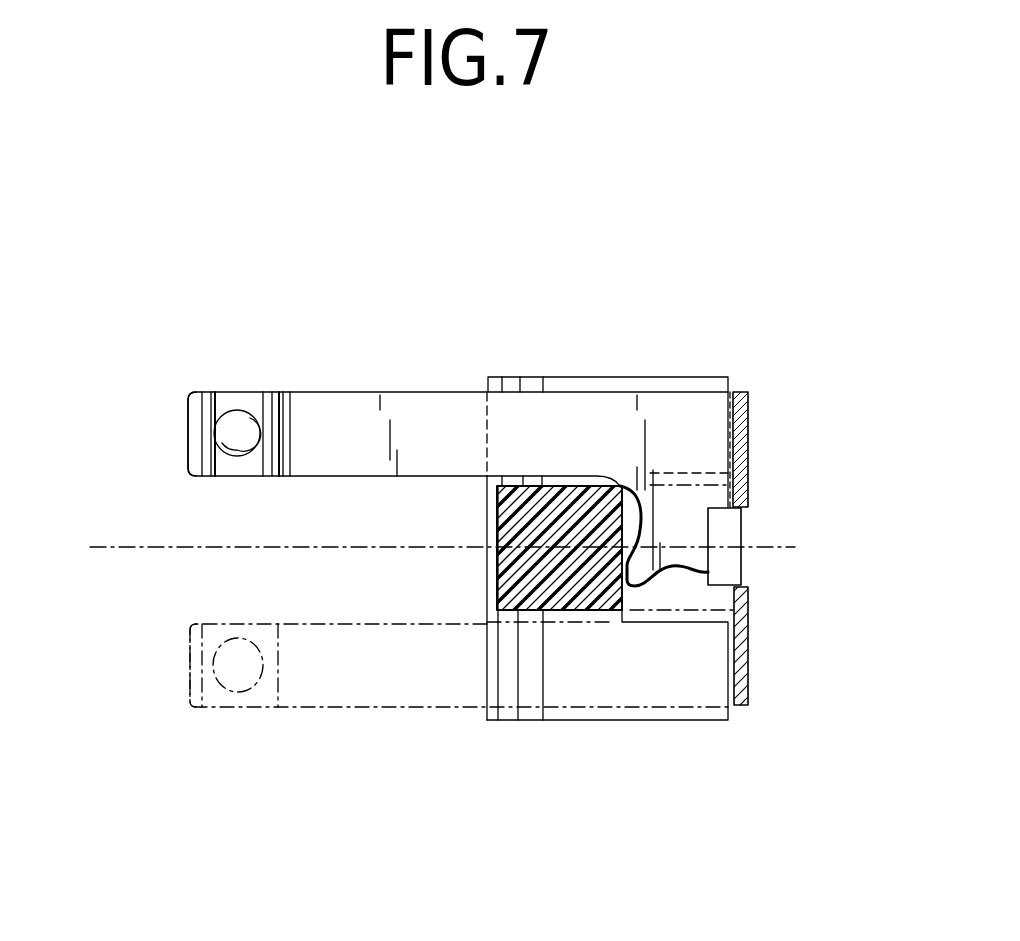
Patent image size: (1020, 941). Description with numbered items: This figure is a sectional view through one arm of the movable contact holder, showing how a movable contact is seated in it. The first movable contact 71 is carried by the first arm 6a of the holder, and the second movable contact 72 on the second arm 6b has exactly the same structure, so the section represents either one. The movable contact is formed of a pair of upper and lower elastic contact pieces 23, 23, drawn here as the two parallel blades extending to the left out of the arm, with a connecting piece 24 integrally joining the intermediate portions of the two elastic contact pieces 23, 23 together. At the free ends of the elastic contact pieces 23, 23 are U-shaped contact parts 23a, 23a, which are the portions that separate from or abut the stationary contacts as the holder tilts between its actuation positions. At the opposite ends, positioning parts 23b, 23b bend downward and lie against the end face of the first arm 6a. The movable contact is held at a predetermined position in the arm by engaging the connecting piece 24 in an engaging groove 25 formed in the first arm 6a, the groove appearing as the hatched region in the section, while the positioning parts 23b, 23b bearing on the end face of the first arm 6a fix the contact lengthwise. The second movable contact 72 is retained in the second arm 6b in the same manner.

The elastic contact piece 23 is at (342, 392).
The contact part 23a is at (190, 433).
The positioning part 23b is at (748, 447).
The first movable contact 71 is at (558, 438).
The second movable contact 72 is at (432, 338).
The first arm 6a is at (610, 474).
The second arm 6b is at (644, 327).
The engaging groove 25 is at (637, 493).
The connecting piece 24 is at (687, 532).